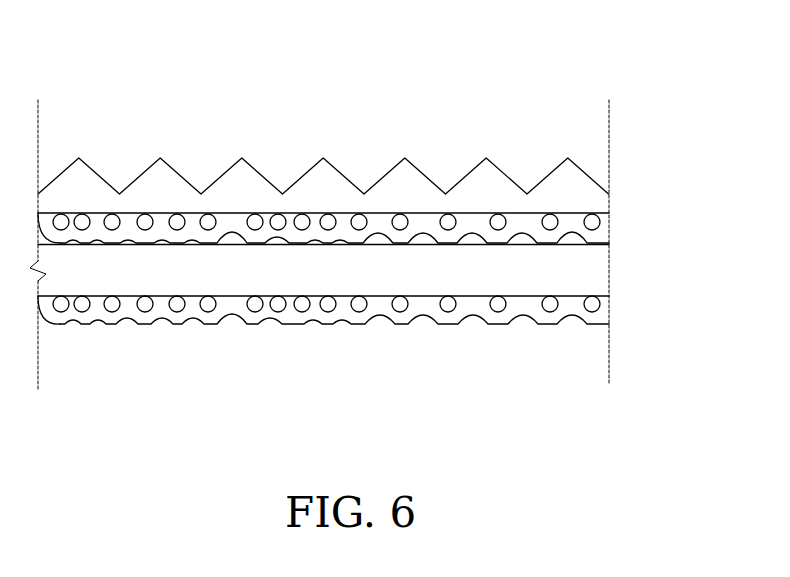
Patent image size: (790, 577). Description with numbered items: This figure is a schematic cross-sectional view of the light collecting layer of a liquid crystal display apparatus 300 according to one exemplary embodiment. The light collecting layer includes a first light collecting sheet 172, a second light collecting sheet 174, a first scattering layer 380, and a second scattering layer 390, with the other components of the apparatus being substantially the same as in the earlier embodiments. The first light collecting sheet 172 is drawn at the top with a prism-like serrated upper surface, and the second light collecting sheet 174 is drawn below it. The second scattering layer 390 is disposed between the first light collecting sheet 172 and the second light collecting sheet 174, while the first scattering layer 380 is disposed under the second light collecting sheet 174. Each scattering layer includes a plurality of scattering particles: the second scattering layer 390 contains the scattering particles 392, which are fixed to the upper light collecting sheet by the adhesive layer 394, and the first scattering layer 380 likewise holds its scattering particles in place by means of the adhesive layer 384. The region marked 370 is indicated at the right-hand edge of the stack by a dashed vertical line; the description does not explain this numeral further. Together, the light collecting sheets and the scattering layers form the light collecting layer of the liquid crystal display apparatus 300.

The liquid crystal display apparatus 300 is at (595, 42).
The non-display region / edge portion 370 is at (622, 135).
The first light collecting sheet 172 is at (573, 194).
The second light collecting sheet 174 is at (590, 270).
The second scattering layer 390 is at (391, 228).
The scattering particles 392 is at (592, 218).
The adhesive layer 394 is at (600, 241).
The first scattering layer 380 is at (391, 313).
The adhesive layer 384 is at (592, 300).